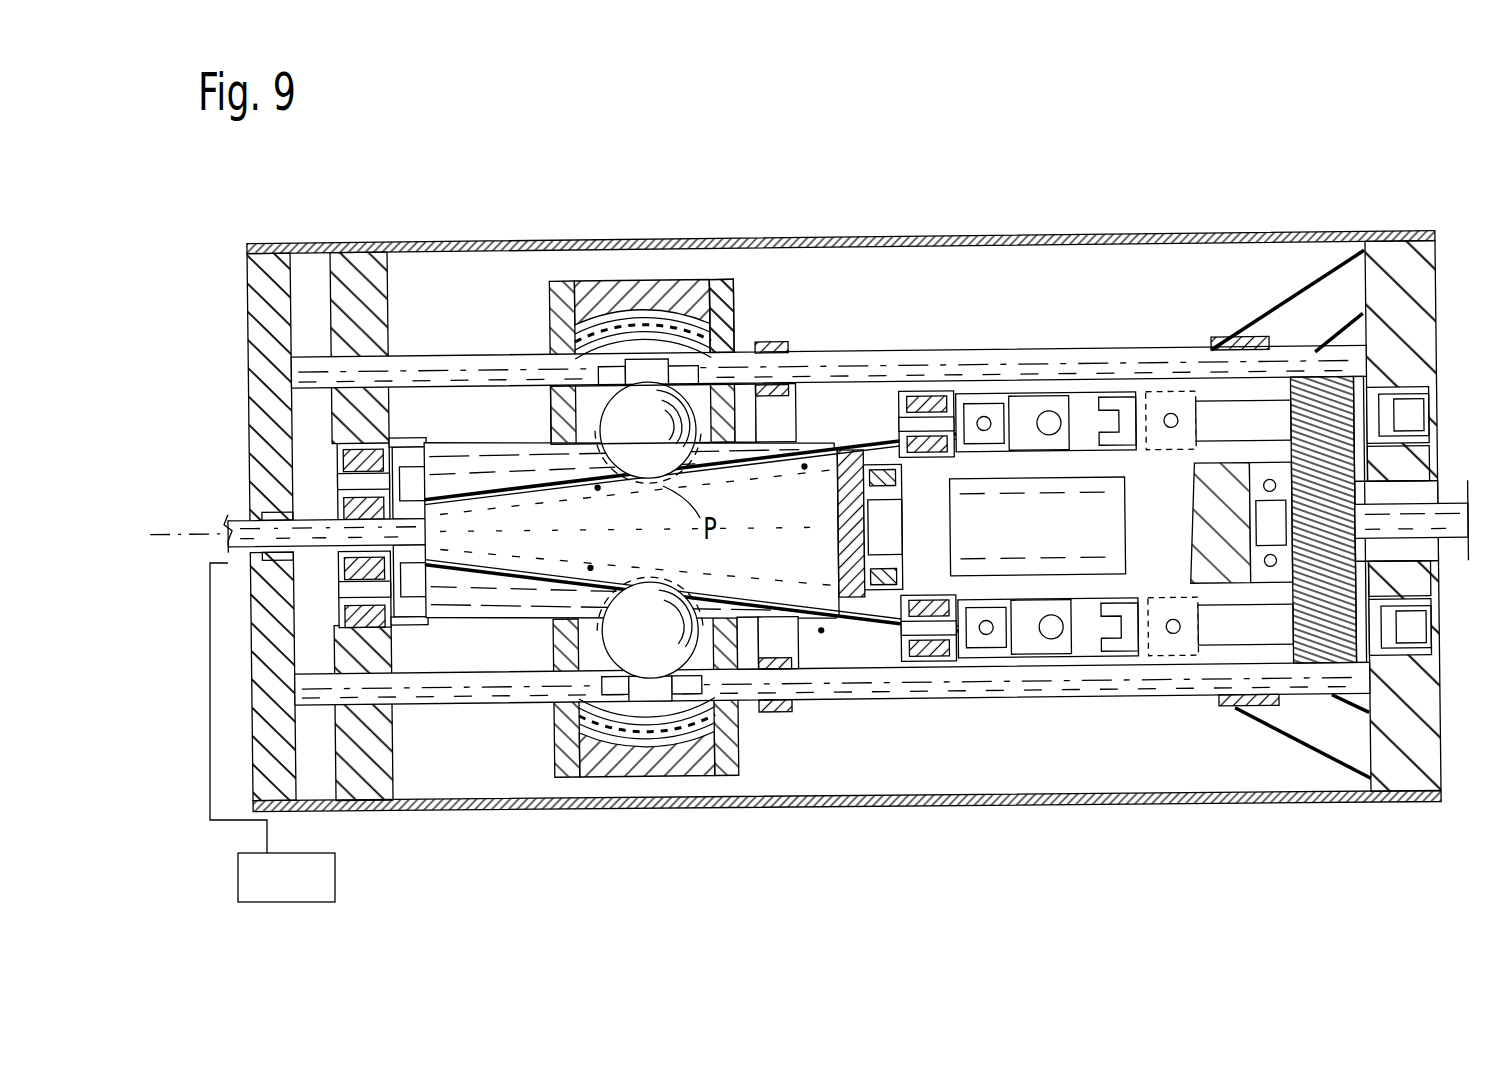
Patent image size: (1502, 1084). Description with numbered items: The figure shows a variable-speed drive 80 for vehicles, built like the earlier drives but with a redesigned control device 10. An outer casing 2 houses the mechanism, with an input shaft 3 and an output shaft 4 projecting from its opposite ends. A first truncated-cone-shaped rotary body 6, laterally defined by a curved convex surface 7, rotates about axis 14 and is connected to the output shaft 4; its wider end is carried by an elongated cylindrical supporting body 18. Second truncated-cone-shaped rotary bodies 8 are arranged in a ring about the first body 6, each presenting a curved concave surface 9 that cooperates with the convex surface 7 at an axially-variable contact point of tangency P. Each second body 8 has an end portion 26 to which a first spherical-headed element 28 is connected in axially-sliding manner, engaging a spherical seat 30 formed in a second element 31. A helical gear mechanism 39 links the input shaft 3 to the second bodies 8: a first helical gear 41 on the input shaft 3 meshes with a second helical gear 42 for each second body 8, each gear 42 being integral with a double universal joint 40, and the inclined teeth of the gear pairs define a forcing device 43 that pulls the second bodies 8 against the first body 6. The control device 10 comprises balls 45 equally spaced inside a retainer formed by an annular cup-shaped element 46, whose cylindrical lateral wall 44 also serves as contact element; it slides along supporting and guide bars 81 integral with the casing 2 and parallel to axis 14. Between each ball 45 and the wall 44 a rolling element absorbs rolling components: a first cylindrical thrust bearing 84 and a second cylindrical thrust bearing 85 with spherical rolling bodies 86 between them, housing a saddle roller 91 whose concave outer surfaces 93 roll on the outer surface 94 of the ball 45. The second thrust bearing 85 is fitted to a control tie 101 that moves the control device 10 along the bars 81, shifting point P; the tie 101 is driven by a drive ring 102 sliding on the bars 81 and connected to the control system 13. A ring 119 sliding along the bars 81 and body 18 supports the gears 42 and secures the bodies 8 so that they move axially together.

The outer casing 2 is at (993, 236).
The input shaft 3 is at (1445, 505).
The output shaft 4 is at (232, 515).
The first truncated-cone-shaped rotary body 6 is at (770, 560).
The curved convex surface 7 is at (800, 462).
The second truncated-cone-shaped rotary bodies 8 is at (517, 465).
The curved concave surface 9 is at (808, 466).
The control device 10 is at (606, 265).
The control system 13 is at (320, 877).
The axis 14 is at (160, 528).
The elongated cylindrical supporting body 18 is at (1006, 537).
The end portion 26 is at (335, 478).
The first spherical-headed element 28 is at (935, 395).
The spherical seat 30 is at (392, 608).
The second element 31 is at (395, 443).
The helical gear mechanism 39 is at (1306, 380).
The double universal joints 40 is at (1085, 400).
The first helical gear 41 is at (1405, 560).
The second helical gear 42 is at (1305, 398).
The forcing device 43 is at (1365, 475).
The cylindrical lateral wall 44 is at (595, 290).
The balls 45 is at (647, 389).
The annular cup-shaped element 46 is at (728, 278).
The variable-speed drive 80 is at (1290, 196).
The supporting and guide bars 81 is at (425, 372).
The first cylindrical thrust bearing 84 is at (638, 312).
The second cylindrical thrust bearing 85 is at (690, 322).
The spherical rolling bodies 86 is at (664, 330).
The saddle roller 91 is at (700, 345).
The concave outer surfaces 93 is at (552, 395).
The outer surface 94 is at (605, 398).
The control tie 101 is at (745, 318).
The drive ring 102 is at (772, 343).
The ring 119 is at (1220, 340).